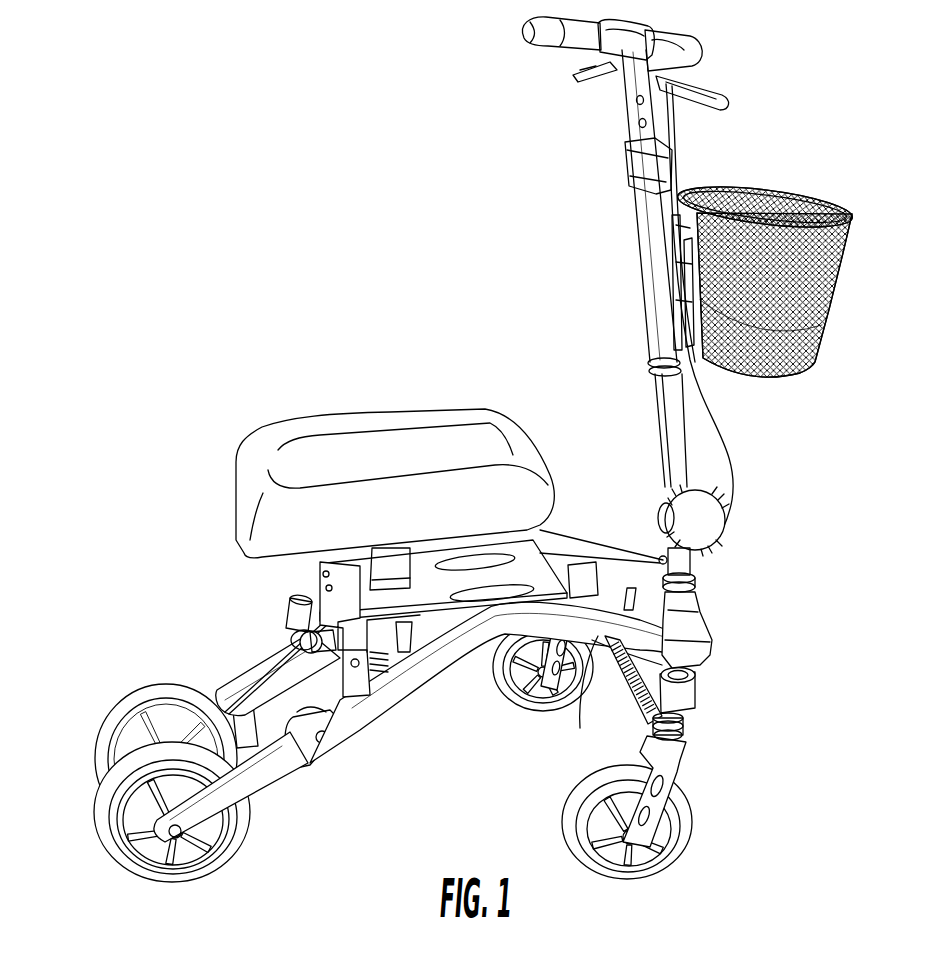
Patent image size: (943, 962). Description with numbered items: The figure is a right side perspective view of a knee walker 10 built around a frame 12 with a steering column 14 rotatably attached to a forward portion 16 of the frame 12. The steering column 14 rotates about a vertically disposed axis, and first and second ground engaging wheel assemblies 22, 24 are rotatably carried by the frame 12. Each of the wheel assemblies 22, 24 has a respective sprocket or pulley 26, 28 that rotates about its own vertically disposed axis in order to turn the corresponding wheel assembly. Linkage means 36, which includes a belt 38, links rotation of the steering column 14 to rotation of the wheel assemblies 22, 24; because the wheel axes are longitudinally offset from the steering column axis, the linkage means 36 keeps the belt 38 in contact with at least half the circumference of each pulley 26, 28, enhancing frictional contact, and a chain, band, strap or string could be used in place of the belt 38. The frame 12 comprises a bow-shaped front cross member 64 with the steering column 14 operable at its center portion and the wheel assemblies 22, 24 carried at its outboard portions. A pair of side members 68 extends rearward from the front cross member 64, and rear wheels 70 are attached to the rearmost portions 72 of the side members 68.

The knee walker 10 is at (307, 224).
The frame 12 is at (457, 650).
The steering column 14 is at (656, 281).
The forward portion 16 is at (625, 643).
The first ground engaging wheel assembly 22 is at (693, 777).
The second ground engaging wheel assembly 24 is at (519, 715).
The sprocket or pulley 26 is at (684, 735).
The sprocket or pulley 28 is at (580, 580).
The linkage means 36 is at (637, 699).
The belt 38 is at (652, 658).
The front cross member 64 is at (701, 619).
The side members 68 is at (263, 678).
The rear wheels 70 is at (97, 849).
The rearmost portions 72 is at (263, 768).